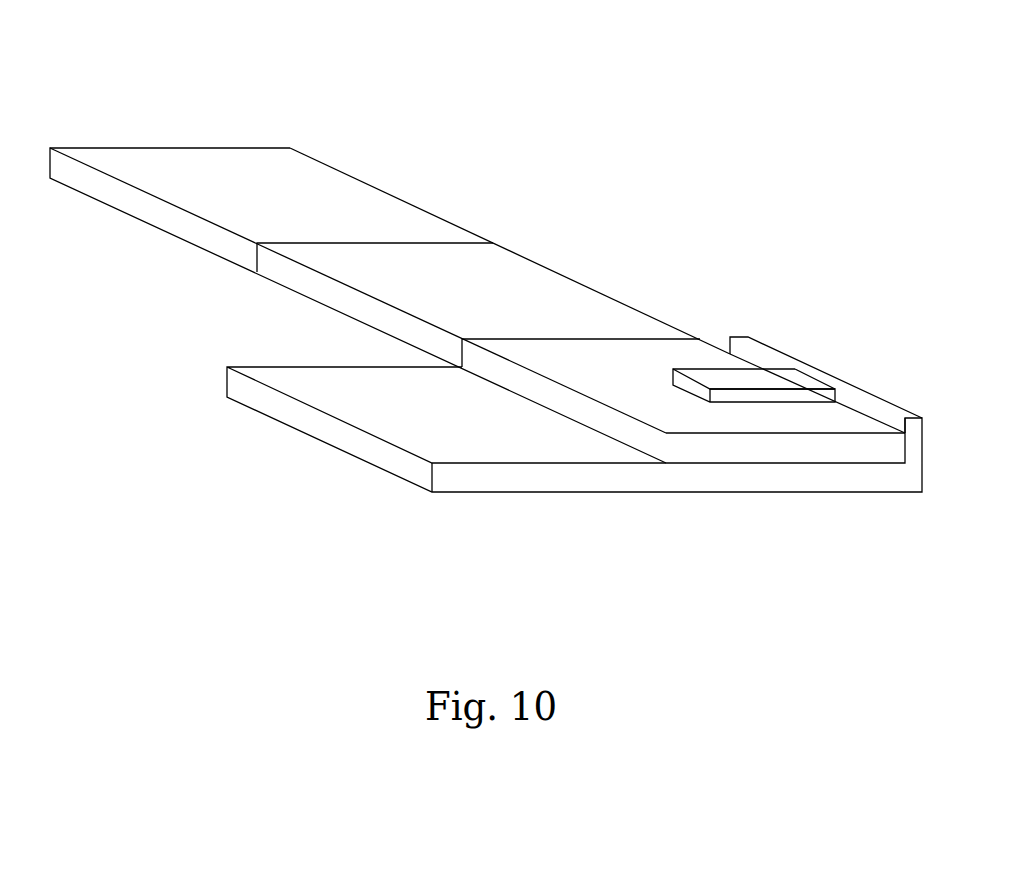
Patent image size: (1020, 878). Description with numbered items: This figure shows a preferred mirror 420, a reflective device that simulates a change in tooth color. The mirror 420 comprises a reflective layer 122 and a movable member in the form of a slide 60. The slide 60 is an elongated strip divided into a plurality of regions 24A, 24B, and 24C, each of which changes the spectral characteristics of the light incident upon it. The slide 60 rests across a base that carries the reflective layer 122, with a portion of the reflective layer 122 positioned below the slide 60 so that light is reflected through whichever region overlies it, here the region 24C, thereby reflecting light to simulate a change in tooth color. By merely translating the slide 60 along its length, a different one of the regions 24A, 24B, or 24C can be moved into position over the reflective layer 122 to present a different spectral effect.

The mirror 420 is at (693, 89).
The slide 60 is at (444, 137).
The region 24A is at (287, 197).
The region 24B is at (523, 280).
The region 24C is at (486, 411).
The reflective layer 122 is at (640, 477).